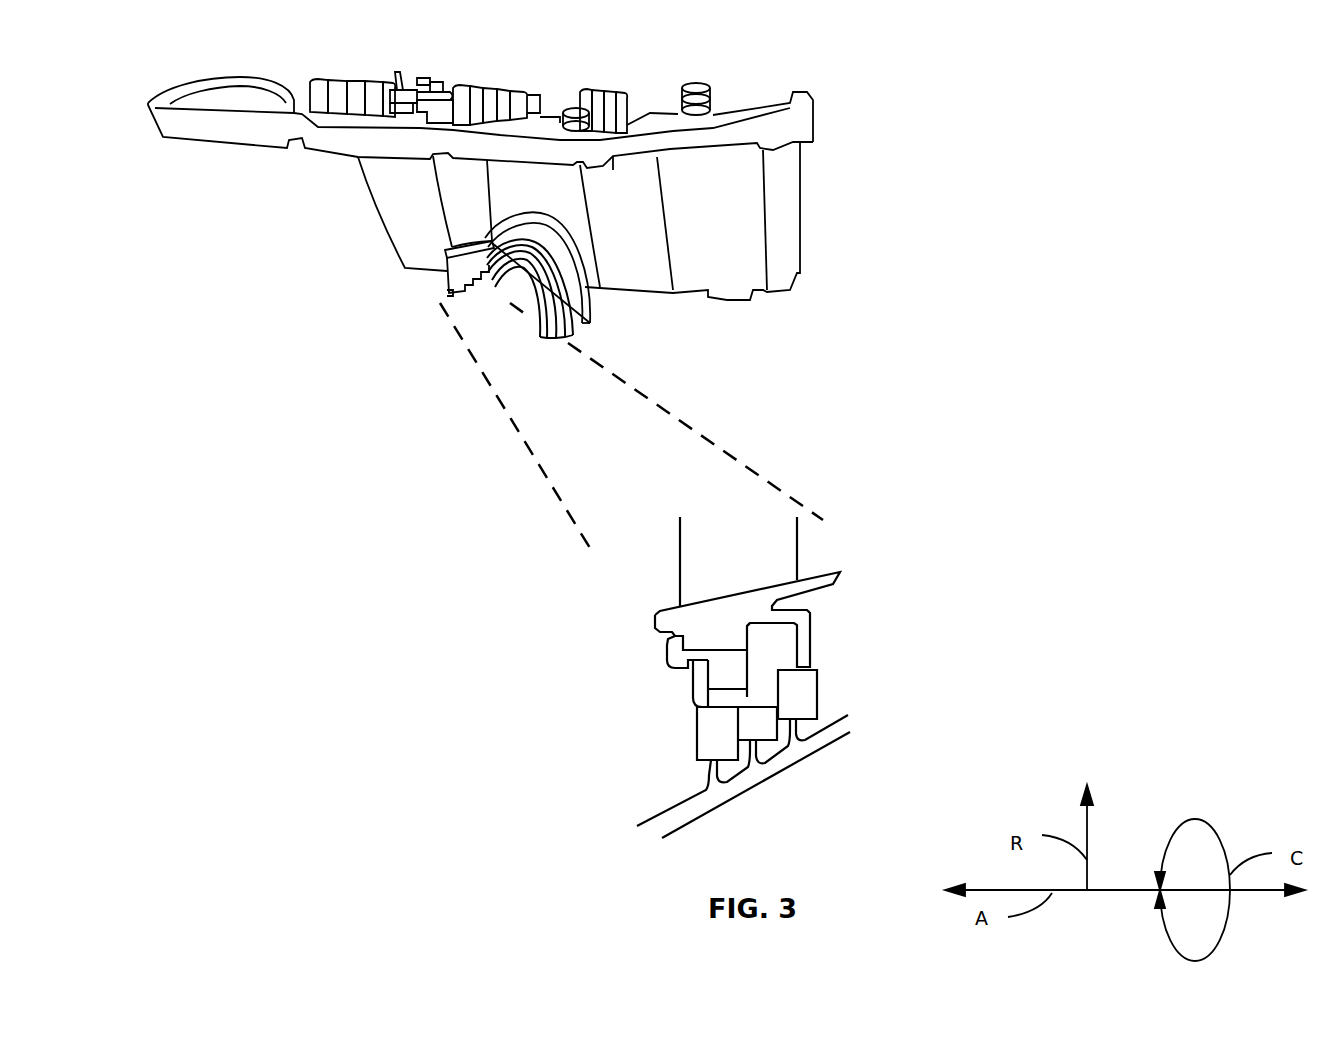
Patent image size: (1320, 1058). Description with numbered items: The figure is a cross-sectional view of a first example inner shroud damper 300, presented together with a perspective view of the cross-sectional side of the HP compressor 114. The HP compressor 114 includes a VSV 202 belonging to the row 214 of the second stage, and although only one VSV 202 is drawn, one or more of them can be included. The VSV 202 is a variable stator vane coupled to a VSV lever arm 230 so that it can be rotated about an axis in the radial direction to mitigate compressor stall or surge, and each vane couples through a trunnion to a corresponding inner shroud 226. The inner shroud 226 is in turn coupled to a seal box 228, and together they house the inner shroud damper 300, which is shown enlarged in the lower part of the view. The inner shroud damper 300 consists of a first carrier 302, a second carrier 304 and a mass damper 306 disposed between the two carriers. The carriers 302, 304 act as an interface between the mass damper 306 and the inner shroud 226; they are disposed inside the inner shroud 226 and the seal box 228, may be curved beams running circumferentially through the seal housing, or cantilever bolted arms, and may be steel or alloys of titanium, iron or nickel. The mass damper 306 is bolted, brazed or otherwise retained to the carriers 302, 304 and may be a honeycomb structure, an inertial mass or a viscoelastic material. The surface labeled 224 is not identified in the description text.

The HP compressor 114 is at (112, 70).
The VSV lever arm 230 is at (410, 80).
The row of stator vanes 214 is at (440, 207).
The stator vane 202 is at (463, 242).
The seal box 228 is at (455, 285).
The inner shroud 226 is at (583, 310).
The inner shroud damper 300 is at (622, 626).
The first carrier 302 is at (700, 666).
The second carrier 304 is at (750, 657).
The mass damper 306 is at (722, 683).
The engine case 224 is at (762, 770).